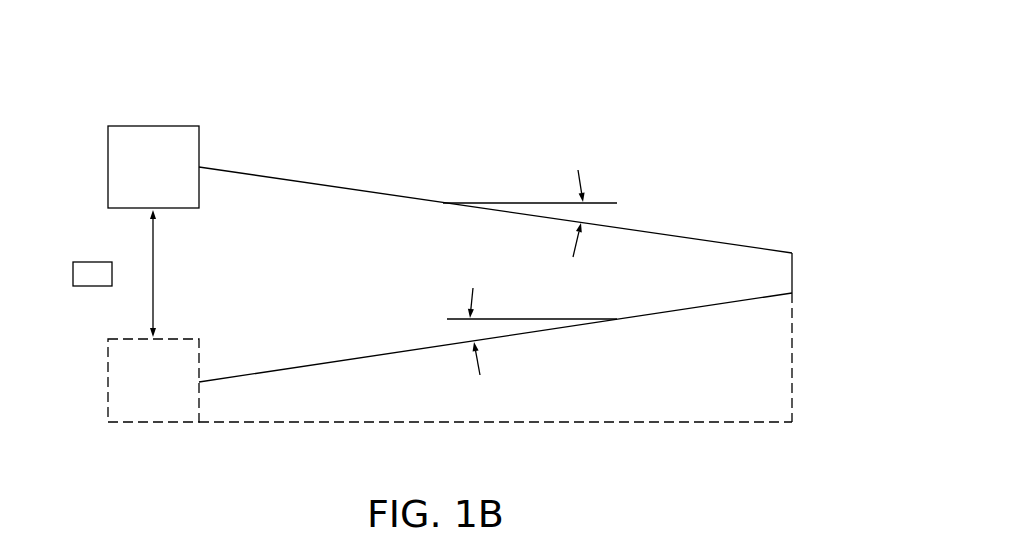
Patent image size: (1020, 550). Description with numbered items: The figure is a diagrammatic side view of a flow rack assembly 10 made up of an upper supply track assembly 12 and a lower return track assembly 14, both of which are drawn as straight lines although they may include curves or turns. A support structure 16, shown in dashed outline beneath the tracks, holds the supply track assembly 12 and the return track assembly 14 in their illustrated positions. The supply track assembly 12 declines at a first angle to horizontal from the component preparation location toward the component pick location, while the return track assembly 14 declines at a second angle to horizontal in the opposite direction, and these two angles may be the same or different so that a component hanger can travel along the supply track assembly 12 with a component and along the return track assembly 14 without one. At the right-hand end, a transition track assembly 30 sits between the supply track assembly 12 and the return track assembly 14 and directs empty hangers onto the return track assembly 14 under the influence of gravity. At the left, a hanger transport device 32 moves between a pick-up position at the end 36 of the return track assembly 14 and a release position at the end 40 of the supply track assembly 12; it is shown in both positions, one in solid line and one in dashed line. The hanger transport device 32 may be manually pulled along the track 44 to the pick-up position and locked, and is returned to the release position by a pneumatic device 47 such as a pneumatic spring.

The flow rack assembly 10 is at (699, 127).
The supply track assembly 12 is at (357, 181).
The return track assembly 14 is at (357, 367).
The support structure 16 is at (803, 358).
The transition track assembly 30 is at (803, 273).
The hanger transport device 32 is at (146, 116).
The end of the return track assembly 36 is at (199, 166).
The end of the supply track assembly 40 is at (199, 380).
The track 44 is at (153, 274).
The pneumatic device 47 is at (93, 262).